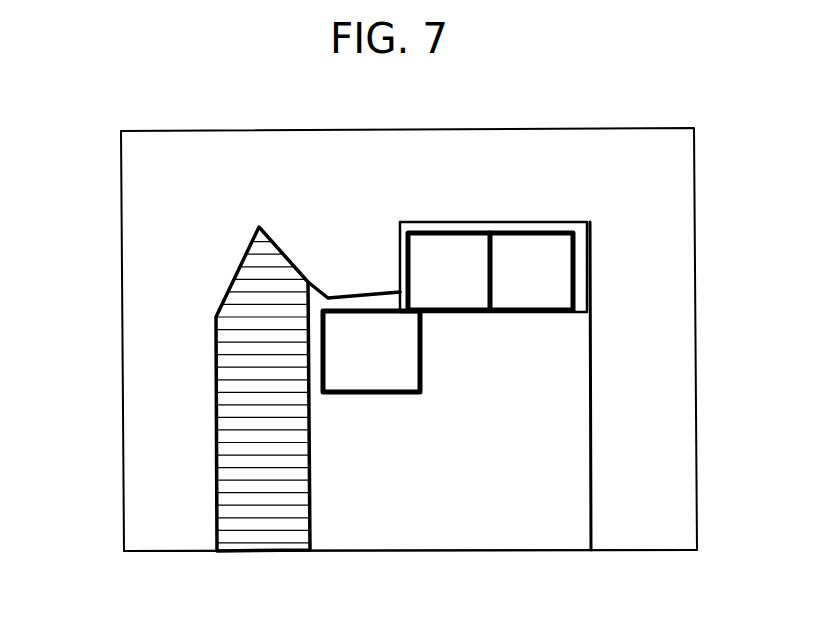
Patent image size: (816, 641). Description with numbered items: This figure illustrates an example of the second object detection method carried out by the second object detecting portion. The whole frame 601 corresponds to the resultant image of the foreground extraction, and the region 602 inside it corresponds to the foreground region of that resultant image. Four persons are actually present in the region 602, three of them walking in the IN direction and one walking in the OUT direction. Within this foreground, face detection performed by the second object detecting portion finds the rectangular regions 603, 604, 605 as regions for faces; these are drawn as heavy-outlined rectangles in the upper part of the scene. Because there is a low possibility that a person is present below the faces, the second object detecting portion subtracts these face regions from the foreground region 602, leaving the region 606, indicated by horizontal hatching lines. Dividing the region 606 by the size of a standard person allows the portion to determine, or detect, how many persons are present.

The whole frame 601 is at (627, 128).
The region 602 is at (403, 538).
The rectangular region 603 is at (537, 315).
The rectangular region 604 is at (452, 315).
The rectangular region 605 is at (422, 373).
The region 606 is at (230, 285).